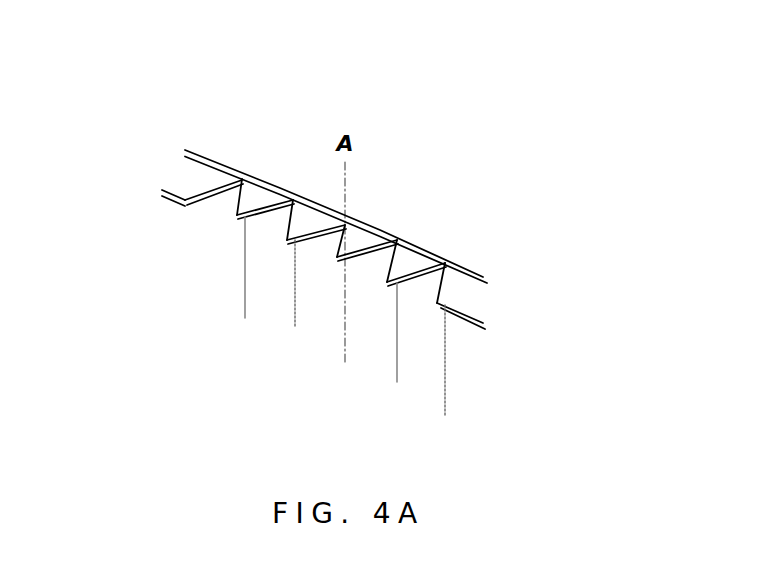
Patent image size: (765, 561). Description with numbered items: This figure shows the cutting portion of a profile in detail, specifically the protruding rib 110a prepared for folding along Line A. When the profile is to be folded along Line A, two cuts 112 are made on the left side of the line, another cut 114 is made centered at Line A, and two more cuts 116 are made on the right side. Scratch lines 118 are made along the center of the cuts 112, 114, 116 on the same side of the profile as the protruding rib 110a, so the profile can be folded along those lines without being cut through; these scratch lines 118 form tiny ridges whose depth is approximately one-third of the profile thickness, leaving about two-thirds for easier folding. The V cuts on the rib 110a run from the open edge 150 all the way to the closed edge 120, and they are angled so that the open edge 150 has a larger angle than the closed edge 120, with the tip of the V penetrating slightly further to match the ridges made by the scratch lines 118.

The protruding rib 110a is at (160, 167).
The cuts 112 is at (266, 202).
The cut 114 is at (322, 222).
The cuts 116 is at (388, 241).
The scratch lines 118 is at (445, 392).
The closed edge 120 is at (496, 262).
The open edge 150 is at (493, 303).